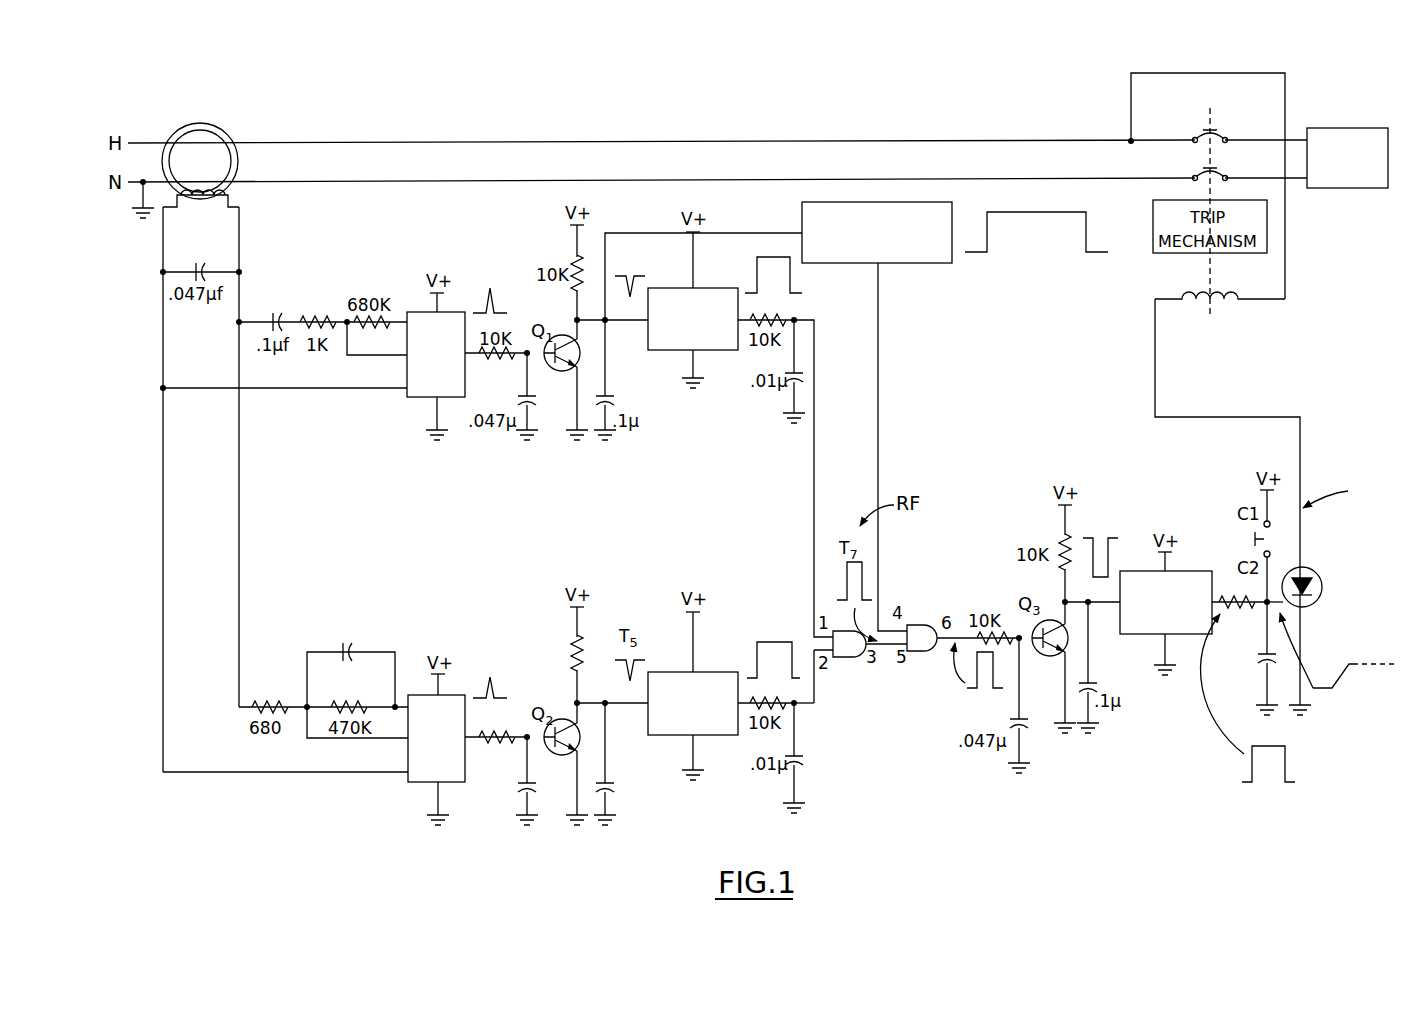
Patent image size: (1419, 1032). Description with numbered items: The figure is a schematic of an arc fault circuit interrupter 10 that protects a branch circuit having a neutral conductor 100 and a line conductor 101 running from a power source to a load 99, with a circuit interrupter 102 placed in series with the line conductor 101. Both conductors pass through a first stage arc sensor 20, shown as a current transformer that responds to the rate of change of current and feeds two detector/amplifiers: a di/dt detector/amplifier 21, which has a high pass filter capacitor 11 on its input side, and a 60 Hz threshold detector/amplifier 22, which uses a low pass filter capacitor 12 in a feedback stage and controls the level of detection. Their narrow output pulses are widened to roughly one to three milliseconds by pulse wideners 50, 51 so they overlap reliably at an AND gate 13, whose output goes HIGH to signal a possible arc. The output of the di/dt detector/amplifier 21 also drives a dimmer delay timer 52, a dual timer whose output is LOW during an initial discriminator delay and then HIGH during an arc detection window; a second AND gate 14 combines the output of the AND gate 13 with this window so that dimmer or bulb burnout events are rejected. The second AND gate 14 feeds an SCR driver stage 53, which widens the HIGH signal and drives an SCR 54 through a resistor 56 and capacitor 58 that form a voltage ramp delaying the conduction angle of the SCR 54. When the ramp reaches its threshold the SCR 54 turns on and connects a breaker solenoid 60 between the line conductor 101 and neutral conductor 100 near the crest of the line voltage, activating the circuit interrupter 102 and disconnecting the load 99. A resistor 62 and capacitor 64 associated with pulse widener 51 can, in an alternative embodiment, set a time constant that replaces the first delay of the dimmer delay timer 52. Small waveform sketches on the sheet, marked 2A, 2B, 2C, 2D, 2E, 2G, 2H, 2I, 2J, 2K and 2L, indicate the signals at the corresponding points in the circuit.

The arc fault circuit interrupter 10 is at (708, 128).
The high pass filter capacitor 11 is at (283, 312).
The low pass filter capacitor 12 is at (355, 648).
The AND gate 13 is at (840, 658).
The second AND gate 14 is at (926, 652).
The first stage arc sensor 20 is at (217, 207).
The di/dt detector/amplifier 21 is at (414, 398).
The 60 Hz threshold detector/amplifier 22 is at (415, 783).
The pulse widener 50 is at (655, 352).
The pulse widener 51 is at (655, 735).
The dimmer delay timer 52 is at (930, 263).
The SCR driver stage 53 is at (1140, 634).
The SCR 54 is at (1323, 586).
The resistor 56 is at (1237, 598).
The capacitor 58 is at (1256, 664).
The breaker solenoid 60 is at (1228, 305).
The resistor 62 is at (572, 655).
The capacitor 64 is at (618, 791).
The load 99 is at (1325, 189).
The neutral conductor 100 is at (290, 182).
The line conductor 101 is at (268, 142).
The circuit interrupter 102 is at (1218, 125).
The waveform T1 (FIG. 2A) 2A is at (473, 258).
The waveform T2 (FIG. 2B) 2B is at (640, 242).
The waveform T3 (FIG. 2C) 2C is at (798, 275).
The waveform T4 (FIG. 2D) 2D is at (476, 645).
The waveform T6 (FIG. 2E) 2E is at (745, 652).
The waveform T13 (FIG. 2G) 2G is at (1058, 288).
The waveform T8 (FIG. 2H) 2H is at (967, 700).
The waveform T9 (FIG. 2I) 2I is at (1100, 500).
The waveform T10 (FIG. 2J) 2J is at (1258, 830).
The waveform T11 (FIG. 2K) 2K is at (1358, 712).
The waveform T12 (FIG. 2L) 2L is at (1360, 470).